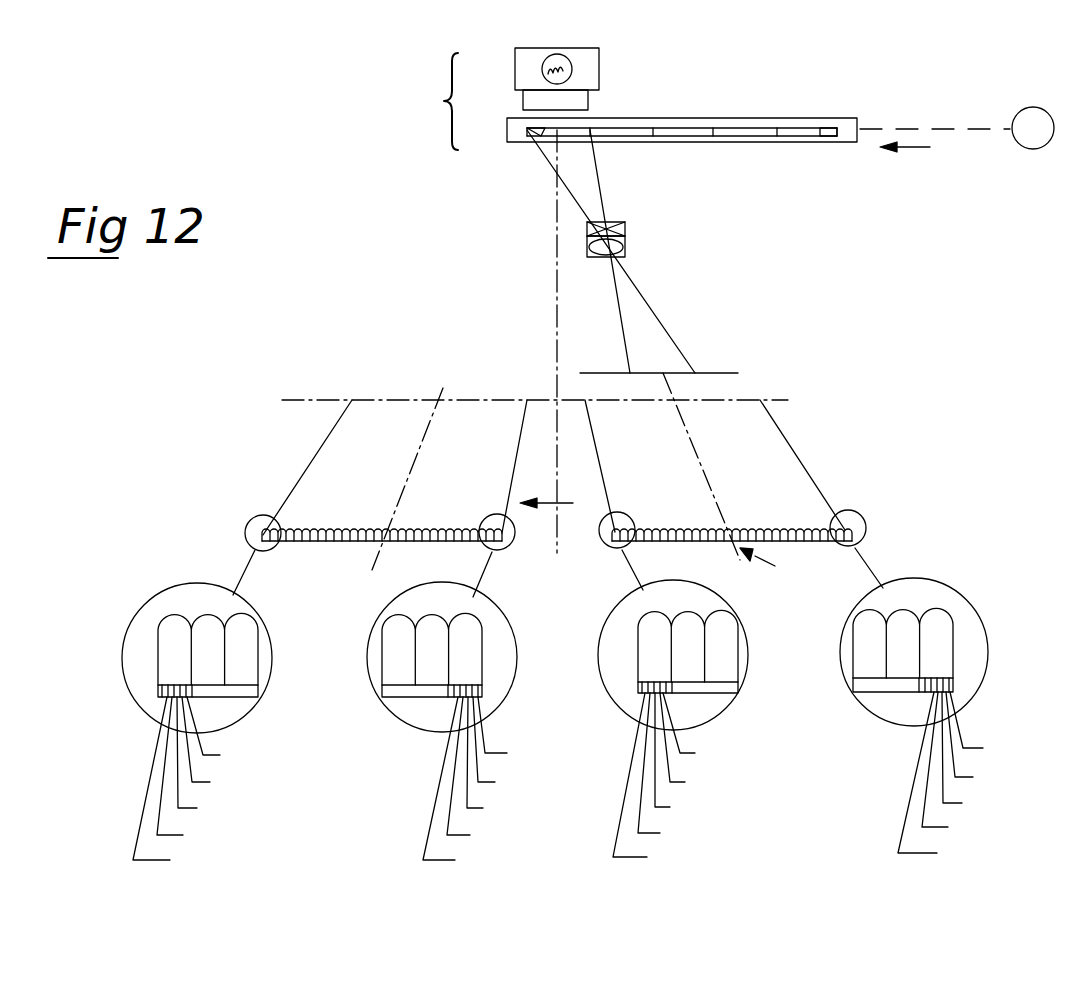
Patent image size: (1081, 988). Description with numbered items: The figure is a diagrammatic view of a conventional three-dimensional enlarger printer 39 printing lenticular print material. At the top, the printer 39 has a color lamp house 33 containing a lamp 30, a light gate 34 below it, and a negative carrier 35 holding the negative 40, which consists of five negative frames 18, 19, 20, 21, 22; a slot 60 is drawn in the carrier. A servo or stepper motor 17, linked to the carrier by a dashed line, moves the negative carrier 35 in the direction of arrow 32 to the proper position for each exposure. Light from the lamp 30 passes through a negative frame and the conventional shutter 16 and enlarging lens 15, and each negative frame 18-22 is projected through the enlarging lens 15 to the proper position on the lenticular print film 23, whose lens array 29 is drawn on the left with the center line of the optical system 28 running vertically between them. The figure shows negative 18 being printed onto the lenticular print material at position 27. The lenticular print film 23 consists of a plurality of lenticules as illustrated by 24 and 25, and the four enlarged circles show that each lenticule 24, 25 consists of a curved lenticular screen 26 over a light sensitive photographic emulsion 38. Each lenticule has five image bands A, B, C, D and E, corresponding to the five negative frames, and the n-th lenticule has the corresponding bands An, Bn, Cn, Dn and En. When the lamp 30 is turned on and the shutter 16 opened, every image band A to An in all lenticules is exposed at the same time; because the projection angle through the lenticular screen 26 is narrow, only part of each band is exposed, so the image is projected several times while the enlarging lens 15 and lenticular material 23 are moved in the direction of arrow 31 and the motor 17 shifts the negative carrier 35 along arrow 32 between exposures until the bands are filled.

The enlarging lens 15 is at (626, 246).
The shutter 16 is at (626, 229).
The servo or stepper motor 17 is at (1033, 107).
The negative frame 18 is at (553, 140).
The negative frame 19 is at (617, 136).
The negative frame 20 is at (677, 136).
The negative frame 21 is at (745, 136).
The negative frame 22 is at (800, 136).
The lenticular print film 23 is at (805, 525).
The lenticule 24 is at (497, 530).
The lenticule 25 is at (262, 537).
The curved lenticular screen 26 is at (500, 530).
The position 27 is at (773, 565).
The center line of the optical system 28 is at (540, 316).
The lens array 29 is at (360, 562).
The lamp 30 is at (558, 54).
The arrow 31 is at (554, 488).
The arrow 32 is at (927, 148).
The color lamp house 33 is at (590, 70).
The light gate 34 is at (584, 105).
The negative carrier 35 is at (772, 122).
The light sensitive photographic emulsion 38 is at (250, 693).
The printer 39 is at (523, 81).
The negative 40 is at (824, 128).
The slot 60 is at (700, 126).
The image band A is at (741, 729).
The image band B is at (734, 743).
The image band C is at (724, 756).
The image band D is at (710, 770).
The image band E is at (692, 782).
The image band An is at (457, 731).
The optical fibre Bn is at (452, 744).
The optical fibre Cn is at (442, 757).
The optical fibre Dn is at (426, 770).
The optical fibre En is at (407, 783).